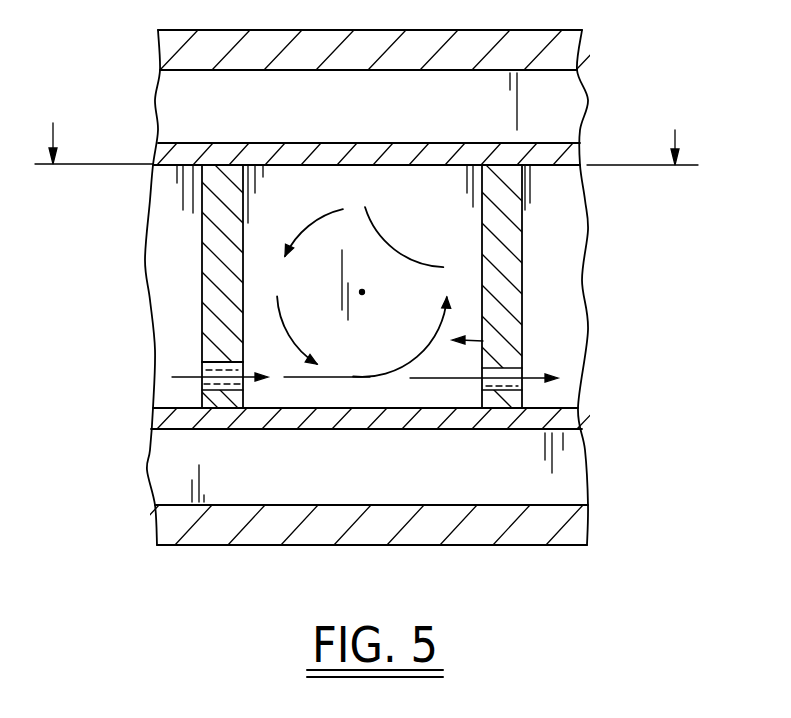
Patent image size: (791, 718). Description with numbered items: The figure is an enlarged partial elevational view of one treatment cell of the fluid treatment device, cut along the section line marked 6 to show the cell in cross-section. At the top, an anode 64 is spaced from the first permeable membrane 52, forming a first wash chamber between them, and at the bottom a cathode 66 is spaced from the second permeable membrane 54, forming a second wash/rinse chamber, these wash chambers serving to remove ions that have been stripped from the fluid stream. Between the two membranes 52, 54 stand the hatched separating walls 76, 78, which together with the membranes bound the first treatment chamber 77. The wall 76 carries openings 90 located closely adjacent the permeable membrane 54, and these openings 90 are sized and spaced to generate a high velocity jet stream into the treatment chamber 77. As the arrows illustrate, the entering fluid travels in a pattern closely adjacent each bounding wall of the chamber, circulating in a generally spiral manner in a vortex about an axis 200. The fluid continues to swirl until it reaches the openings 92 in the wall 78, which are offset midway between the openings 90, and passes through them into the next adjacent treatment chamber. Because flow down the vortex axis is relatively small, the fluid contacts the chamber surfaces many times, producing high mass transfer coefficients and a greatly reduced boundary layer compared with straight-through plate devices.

The section line 6- 6 is at (366, 164).
The first permeable membrane 52 is at (398, 143).
The permeable membrane 54 is at (342, 432).
The anode 64 is at (282, 73).
The cathode 66 is at (477, 505).
The separating wall 76 is at (202, 250).
The first treatment chamber 77 is at (483, 341).
The separating wall 78 is at (522, 260).
The openings 90 is at (202, 383).
The openings 92 is at (522, 384).
The axis 200 is at (362, 292).